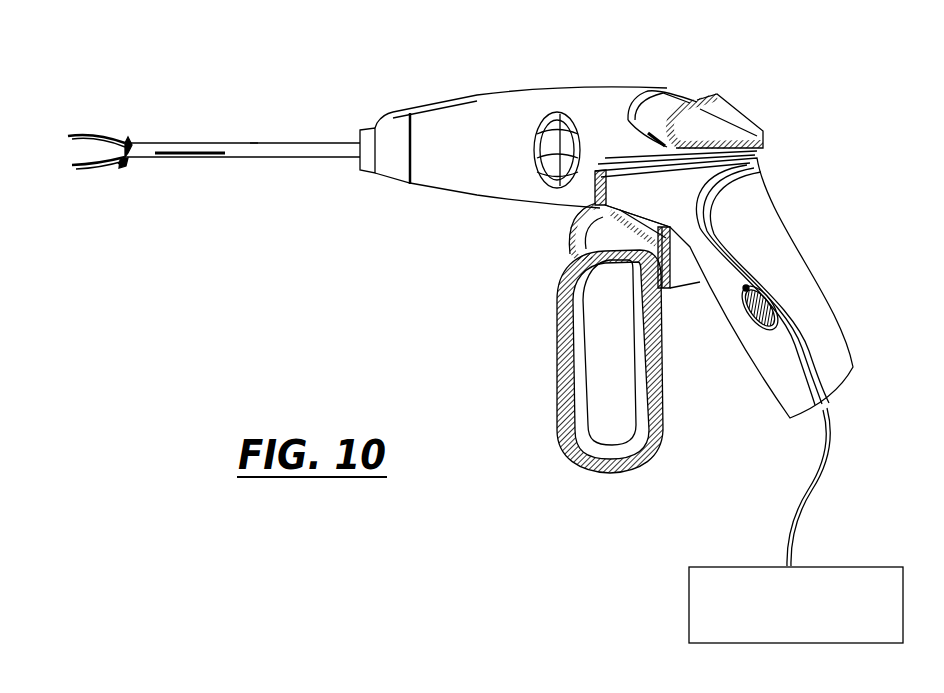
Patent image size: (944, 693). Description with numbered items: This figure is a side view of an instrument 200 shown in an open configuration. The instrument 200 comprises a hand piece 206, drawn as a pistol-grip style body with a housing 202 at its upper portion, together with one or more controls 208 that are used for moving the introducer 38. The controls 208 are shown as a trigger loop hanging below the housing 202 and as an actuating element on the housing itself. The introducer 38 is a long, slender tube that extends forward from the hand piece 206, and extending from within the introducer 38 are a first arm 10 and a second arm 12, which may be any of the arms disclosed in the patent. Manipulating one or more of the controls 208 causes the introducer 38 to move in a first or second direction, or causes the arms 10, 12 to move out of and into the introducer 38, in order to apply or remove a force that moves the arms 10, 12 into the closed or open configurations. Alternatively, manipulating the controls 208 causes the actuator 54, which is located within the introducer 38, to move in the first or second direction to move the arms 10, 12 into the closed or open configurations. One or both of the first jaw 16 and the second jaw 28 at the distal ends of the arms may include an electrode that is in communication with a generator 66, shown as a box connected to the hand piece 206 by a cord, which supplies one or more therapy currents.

The instrument 200 is at (748, 82).
The housing 202 is at (494, 118).
The hand piece 206 is at (814, 279).
The controls 208 is at (547, 113).
The first arm 10 is at (130, 137).
The second arm 12 is at (120, 164).
The first jaw 16 is at (108, 138).
The second jaw 28 is at (108, 159).
The introducer 38 is at (305, 158).
The actuator 54 is at (255, 143).
The generator 66 is at (810, 605).